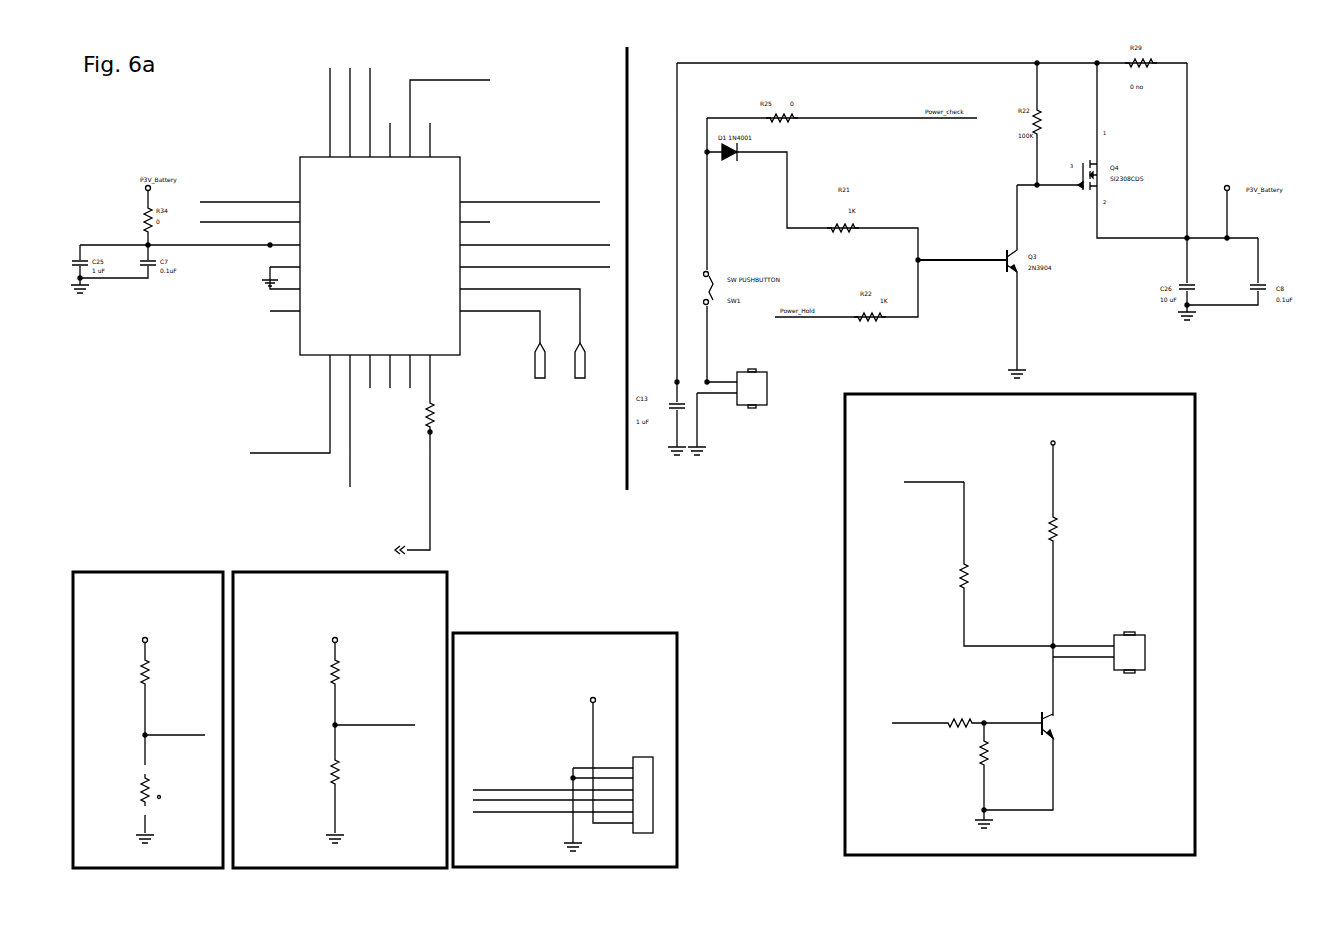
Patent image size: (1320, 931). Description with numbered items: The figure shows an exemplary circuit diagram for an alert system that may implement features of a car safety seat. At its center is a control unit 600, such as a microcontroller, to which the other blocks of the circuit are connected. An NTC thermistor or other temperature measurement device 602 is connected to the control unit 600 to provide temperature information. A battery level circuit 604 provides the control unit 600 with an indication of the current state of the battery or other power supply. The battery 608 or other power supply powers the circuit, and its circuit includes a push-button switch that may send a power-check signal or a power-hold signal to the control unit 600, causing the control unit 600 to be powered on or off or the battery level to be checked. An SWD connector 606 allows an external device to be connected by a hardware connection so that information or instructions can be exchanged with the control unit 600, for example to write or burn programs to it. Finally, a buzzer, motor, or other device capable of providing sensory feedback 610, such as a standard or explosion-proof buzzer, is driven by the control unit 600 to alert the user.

The control unit 600 is at (293, 162).
The NTC thermistor 602 is at (148, 707).
The battery level circuit 604 is at (340, 707).
The SWD connector 606 is at (565, 737).
The battery 608 is at (766, 432).
The device capable of providing sensory feedback 610 is at (1045, 624).